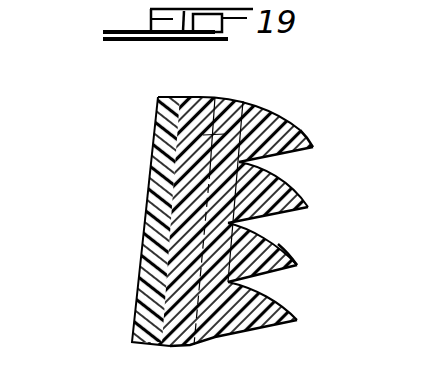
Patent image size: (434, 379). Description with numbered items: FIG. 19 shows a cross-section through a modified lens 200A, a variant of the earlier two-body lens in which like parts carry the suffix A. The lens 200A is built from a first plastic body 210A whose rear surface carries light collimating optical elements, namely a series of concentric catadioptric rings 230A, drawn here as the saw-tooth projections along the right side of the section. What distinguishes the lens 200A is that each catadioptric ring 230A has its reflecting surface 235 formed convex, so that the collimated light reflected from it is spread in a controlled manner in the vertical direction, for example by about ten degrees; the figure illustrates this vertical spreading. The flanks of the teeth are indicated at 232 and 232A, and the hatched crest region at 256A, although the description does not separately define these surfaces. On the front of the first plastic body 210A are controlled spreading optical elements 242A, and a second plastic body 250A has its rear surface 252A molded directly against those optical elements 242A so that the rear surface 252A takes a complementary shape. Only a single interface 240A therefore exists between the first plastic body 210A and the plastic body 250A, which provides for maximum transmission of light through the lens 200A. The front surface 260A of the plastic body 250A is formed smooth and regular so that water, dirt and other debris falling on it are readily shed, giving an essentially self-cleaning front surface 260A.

The lens 200A is at (134, 178).
The first plastic body 210A is at (262, 91).
The catadioptric rings 230A is at (283, 185).
The tooth flank 232 is at (272, 329).
The tooth flank 232A is at (290, 211).
The reflecting surface 235 is at (303, 128).
The interface 240A is at (185, 97).
The optical elements 242A is at (153, 137).
The plastic body 250A is at (173, 99).
The rear surface 252A is at (134, 343).
The crest surface 256A is at (320, 112).
The front surface 260A is at (139, 270).